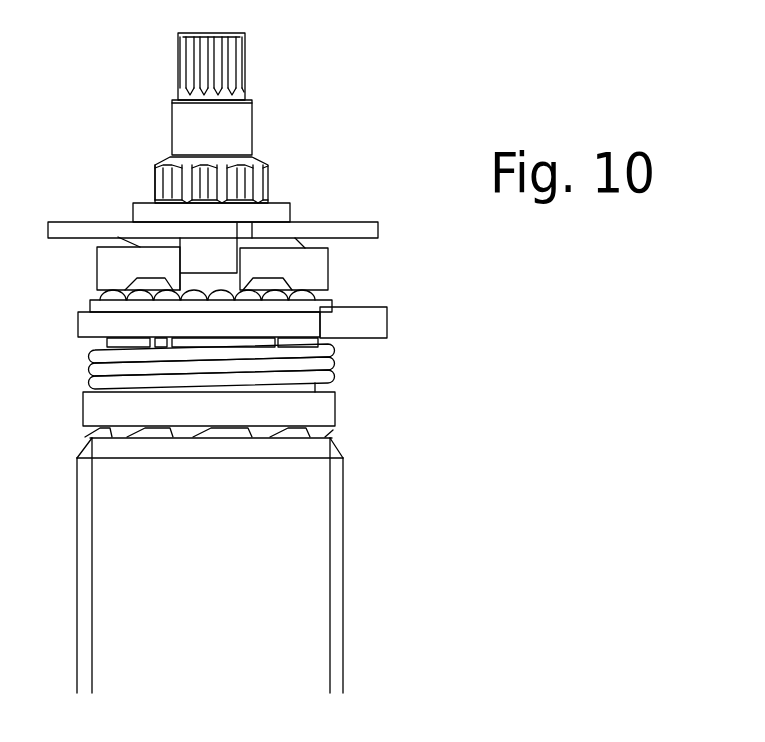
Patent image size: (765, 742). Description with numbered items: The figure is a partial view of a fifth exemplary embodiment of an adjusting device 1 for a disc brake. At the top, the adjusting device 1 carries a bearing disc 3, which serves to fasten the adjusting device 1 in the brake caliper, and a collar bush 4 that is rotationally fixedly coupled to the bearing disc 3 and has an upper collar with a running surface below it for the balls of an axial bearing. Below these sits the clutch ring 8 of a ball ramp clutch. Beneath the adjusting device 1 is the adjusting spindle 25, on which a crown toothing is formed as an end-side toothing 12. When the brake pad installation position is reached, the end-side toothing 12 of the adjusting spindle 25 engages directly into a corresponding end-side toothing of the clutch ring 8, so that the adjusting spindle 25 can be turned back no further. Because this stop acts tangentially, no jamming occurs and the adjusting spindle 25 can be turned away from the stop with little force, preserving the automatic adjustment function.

The adjusting device 1 is at (98, 157).
The bearing disc 3 is at (338, 213).
The collar bush 4 is at (330, 272).
The clutch ring 8 is at (337, 408).
The end-side toothing 12 is at (298, 433).
The adjusting spindle 25 is at (352, 613).